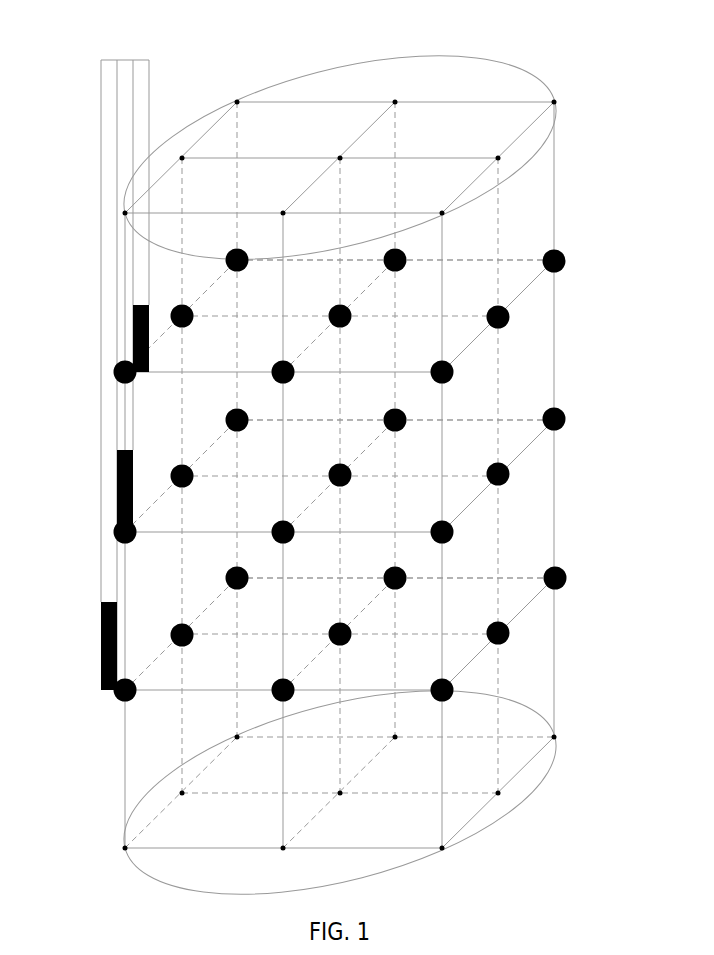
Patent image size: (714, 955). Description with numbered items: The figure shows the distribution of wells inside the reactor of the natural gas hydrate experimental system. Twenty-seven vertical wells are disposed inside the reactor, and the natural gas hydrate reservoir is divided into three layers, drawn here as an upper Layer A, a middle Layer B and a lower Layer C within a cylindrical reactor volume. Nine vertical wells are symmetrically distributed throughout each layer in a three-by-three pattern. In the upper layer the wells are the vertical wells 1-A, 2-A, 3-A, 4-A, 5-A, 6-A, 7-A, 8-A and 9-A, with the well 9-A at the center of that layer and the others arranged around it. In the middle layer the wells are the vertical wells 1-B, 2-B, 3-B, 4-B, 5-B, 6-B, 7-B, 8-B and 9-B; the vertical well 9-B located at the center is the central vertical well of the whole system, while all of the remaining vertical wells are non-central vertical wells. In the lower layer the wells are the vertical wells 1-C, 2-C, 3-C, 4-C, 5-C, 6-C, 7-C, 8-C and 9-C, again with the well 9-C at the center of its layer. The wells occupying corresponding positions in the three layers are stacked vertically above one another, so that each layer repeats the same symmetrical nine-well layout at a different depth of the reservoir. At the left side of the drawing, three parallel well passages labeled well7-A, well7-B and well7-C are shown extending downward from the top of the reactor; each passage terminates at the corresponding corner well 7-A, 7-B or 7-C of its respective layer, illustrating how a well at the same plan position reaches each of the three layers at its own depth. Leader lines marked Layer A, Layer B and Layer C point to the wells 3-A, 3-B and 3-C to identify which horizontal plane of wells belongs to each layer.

The vertical well 1-A is at (251, 251).
The vertical well 2-A is at (412, 251).
The vertical well 3-A is at (568, 248).
The vertical well 4-A is at (520, 315).
The vertical well 5-A is at (463, 371).
The vertical well 6-A is at (307, 366).
The vertical well 7-A is at (144, 366).
The vertical well 8-A is at (202, 309).
The vertical well 9-A is at (363, 309).
The vertical well 1-B is at (251, 412).
The vertical well 2-B is at (410, 414).
The vertical well 3-B is at (571, 412).
The vertical well 4-B is at (514, 467).
The vertical well 5-B is at (459, 524).
The vertical well 6-B is at (300, 526).
The vertical well 7-B is at (143, 526).
The vertical well 8-B is at (200, 473).
The central vertical well 9-B is at (357, 471).
The vertical well 1-C is at (251, 569).
The vertical well 2-C is at (411, 569).
The vertical well 3-C is at (575, 565).
The vertical well 4-C is at (519, 628).
The vertical well 5-C is at (463, 684).
The vertical well 6-C is at (308, 685).
The vertical well 7-C is at (150, 684).
The vertical well 8-C is at (201, 630).
The vertical well 9-C is at (360, 629).
The well channel to node 7 of layer A well7-A is at (245, 50).
The well channel to node 7 of layer B well7-B is at (182, 28).
The well channel to node 7 of layer C well7-C is at (110, 110).
The layer A of sensing nodes Layer A is at (662, 291).
The layer B of sensing nodes Layer B is at (662, 453).
The layer C of sensing nodes Layer C is at (662, 613).